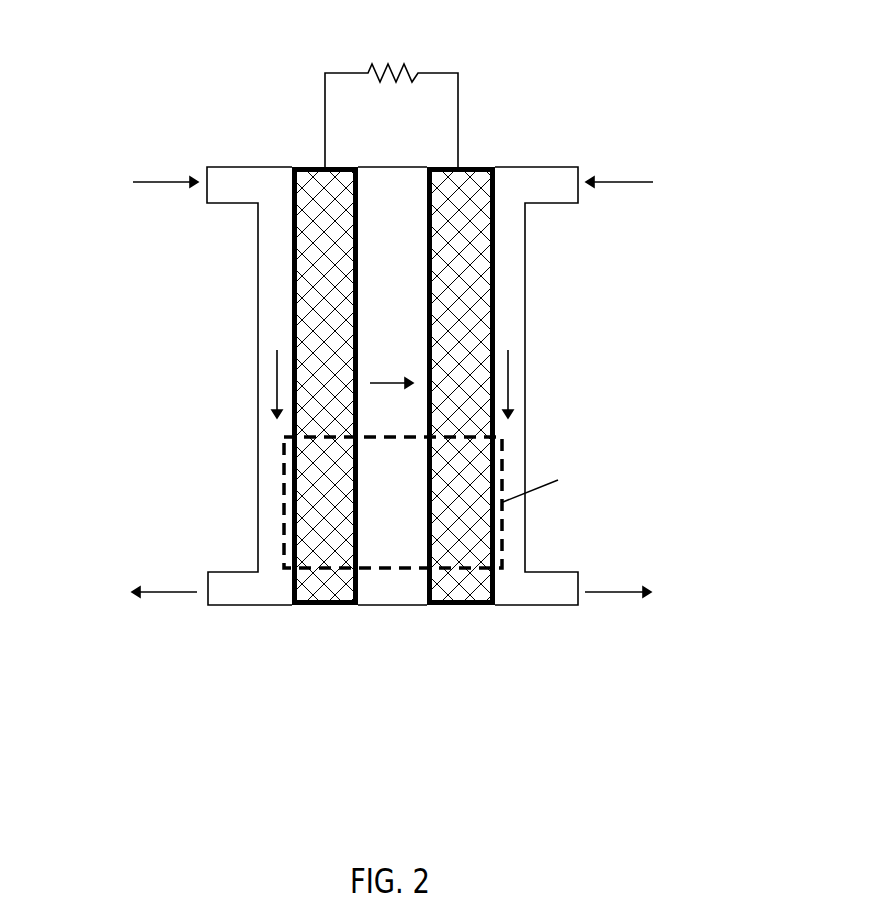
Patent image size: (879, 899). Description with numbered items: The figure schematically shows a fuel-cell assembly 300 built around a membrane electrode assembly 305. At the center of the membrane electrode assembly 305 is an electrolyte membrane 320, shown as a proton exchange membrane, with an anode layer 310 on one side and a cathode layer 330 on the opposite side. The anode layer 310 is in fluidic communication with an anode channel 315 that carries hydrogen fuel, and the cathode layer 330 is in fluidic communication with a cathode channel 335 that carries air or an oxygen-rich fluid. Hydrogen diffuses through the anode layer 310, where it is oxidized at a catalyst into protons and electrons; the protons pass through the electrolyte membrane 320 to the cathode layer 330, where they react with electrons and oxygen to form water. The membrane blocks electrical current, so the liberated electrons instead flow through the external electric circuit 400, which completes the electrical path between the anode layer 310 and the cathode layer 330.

The fuel-cell assembly 300 is at (223, 130).
The membrane electrode assembly 305 is at (392, 458).
The anode layer 310 is at (350, 613).
The anode channel 315 is at (267, 268).
The electrolyte membrane 320 is at (425, 613).
The cathode layer 330 is at (464, 424).
The cathode channel 335 is at (525, 267).
The external electric circuit 400 is at (403, 63).